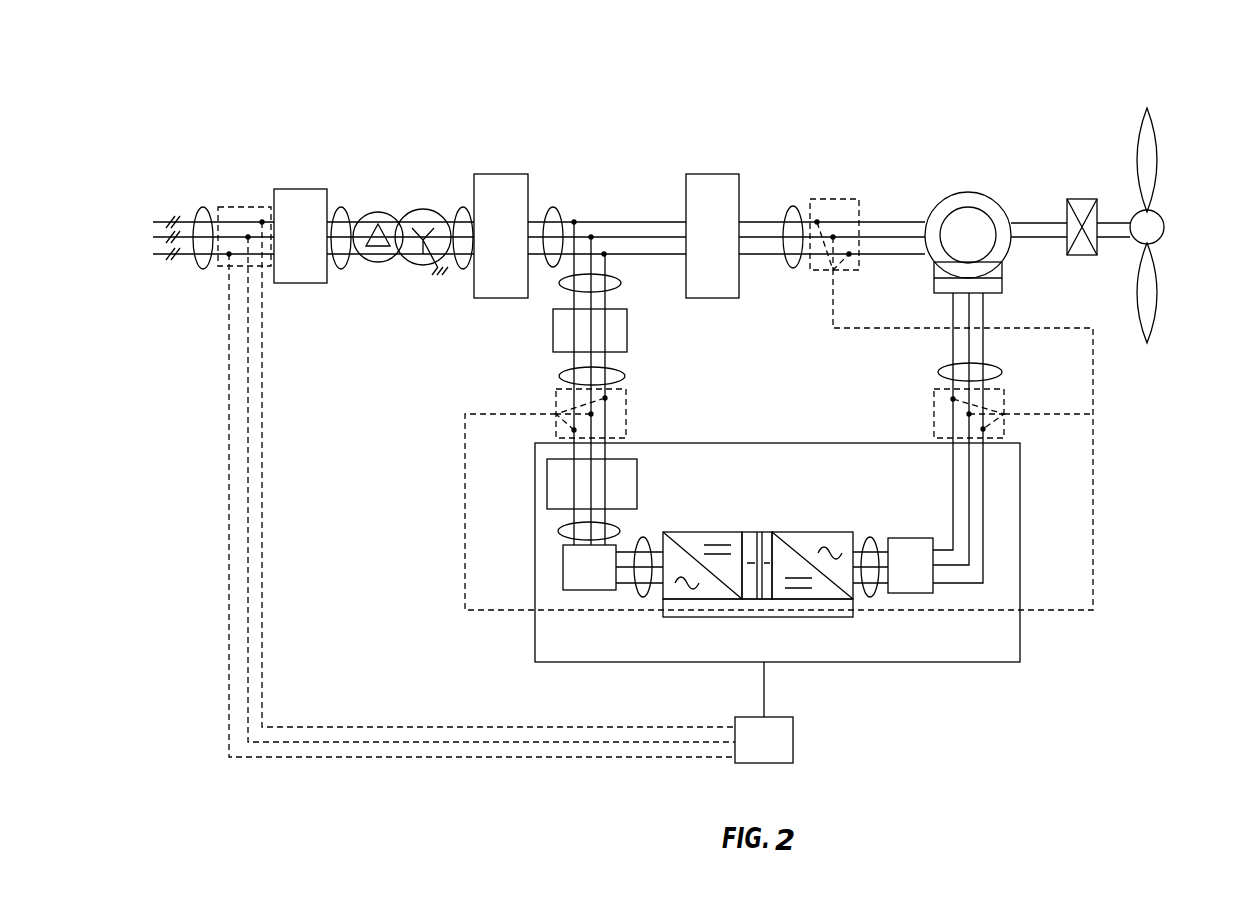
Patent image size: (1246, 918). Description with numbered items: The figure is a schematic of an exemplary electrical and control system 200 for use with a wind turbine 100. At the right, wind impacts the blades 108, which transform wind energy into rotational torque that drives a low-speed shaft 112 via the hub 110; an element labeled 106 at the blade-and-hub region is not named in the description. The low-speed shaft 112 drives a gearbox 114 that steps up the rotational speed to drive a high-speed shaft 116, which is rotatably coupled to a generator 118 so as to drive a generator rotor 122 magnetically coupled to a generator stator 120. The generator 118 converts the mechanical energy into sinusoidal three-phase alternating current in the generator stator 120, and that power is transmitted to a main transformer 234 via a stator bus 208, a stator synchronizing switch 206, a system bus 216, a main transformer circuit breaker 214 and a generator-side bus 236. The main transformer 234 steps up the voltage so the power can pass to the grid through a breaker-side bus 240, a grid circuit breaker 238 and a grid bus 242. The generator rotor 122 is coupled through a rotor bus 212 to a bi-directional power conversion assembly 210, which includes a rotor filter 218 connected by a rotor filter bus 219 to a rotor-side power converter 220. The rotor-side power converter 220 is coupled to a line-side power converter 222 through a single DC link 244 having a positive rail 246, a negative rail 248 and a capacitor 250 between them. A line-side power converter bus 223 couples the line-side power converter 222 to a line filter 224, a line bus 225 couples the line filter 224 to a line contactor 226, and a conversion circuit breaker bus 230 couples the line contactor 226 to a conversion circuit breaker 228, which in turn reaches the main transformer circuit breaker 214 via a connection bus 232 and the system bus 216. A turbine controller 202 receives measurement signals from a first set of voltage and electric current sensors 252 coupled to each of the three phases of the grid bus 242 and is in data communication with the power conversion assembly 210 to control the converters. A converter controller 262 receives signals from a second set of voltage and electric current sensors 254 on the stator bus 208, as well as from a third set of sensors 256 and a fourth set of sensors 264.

The wind turbine 100 is at (1127, 193).
The rotor 106 is at (1187, 225).
The blades 108 is at (1157, 152).
The hub 110 is at (1165, 222).
The low-speed shaft 112 is at (1108, 222).
The gearbox 114 is at (1078, 199).
The high-speed shaft 116 is at (1033, 222).
The generator 118 is at (960, 180).
The generator stator 120 is at (970, 192).
The generator rotor 122 is at (962, 220).
The electrical and control system 200 is at (228, 113).
The turbine controller 202 is at (781, 753).
The stator synchronizing switch 206 is at (708, 174).
The stator bus 208 is at (795, 207).
The power conversion assembly 210 is at (1020, 520).
The rotor bus 212 is at (1002, 372).
The main transformer circuit breaker 214 is at (505, 174).
The system bus 216 is at (556, 207).
The rotor filter 218 is at (905, 548).
The rotor filter bus 219 is at (870, 540).
The rotor-side power converter 220 is at (858, 602).
The line-side power converter 222 is at (663, 597).
The line-side power converter bus 223 is at (648, 540).
The line filter 224 is at (563, 570).
The line bus 225 is at (560, 525).
The line contactor 226 is at (547, 483).
The conversion circuit breaker 228 is at (627, 330).
The conversion circuit breaker bus 230 is at (625, 376).
The connection bus 232 is at (622, 283).
The main transformer 234 is at (420, 209).
The generator-side bus 236 is at (463, 207).
The grid circuit breaker 238 is at (300, 189).
The breaker-side bus 240 is at (343, 207).
The grid bus 242 is at (203, 207).
The DC link 244 is at (744, 496).
The positive rail 246 is at (764, 532).
The negative rail 248 is at (725, 550).
The capacitor 250 is at (752, 562).
The first set of voltage and electric current sensors 252 is at (216, 280).
The second set of voltage and electric current sensors 254 is at (844, 190).
The third set of voltage and electric current sensors 256 is at (934, 426).
The converter controller 262 is at (816, 612).
The fourth set of voltage and electric current sensors 264 is at (628, 415).